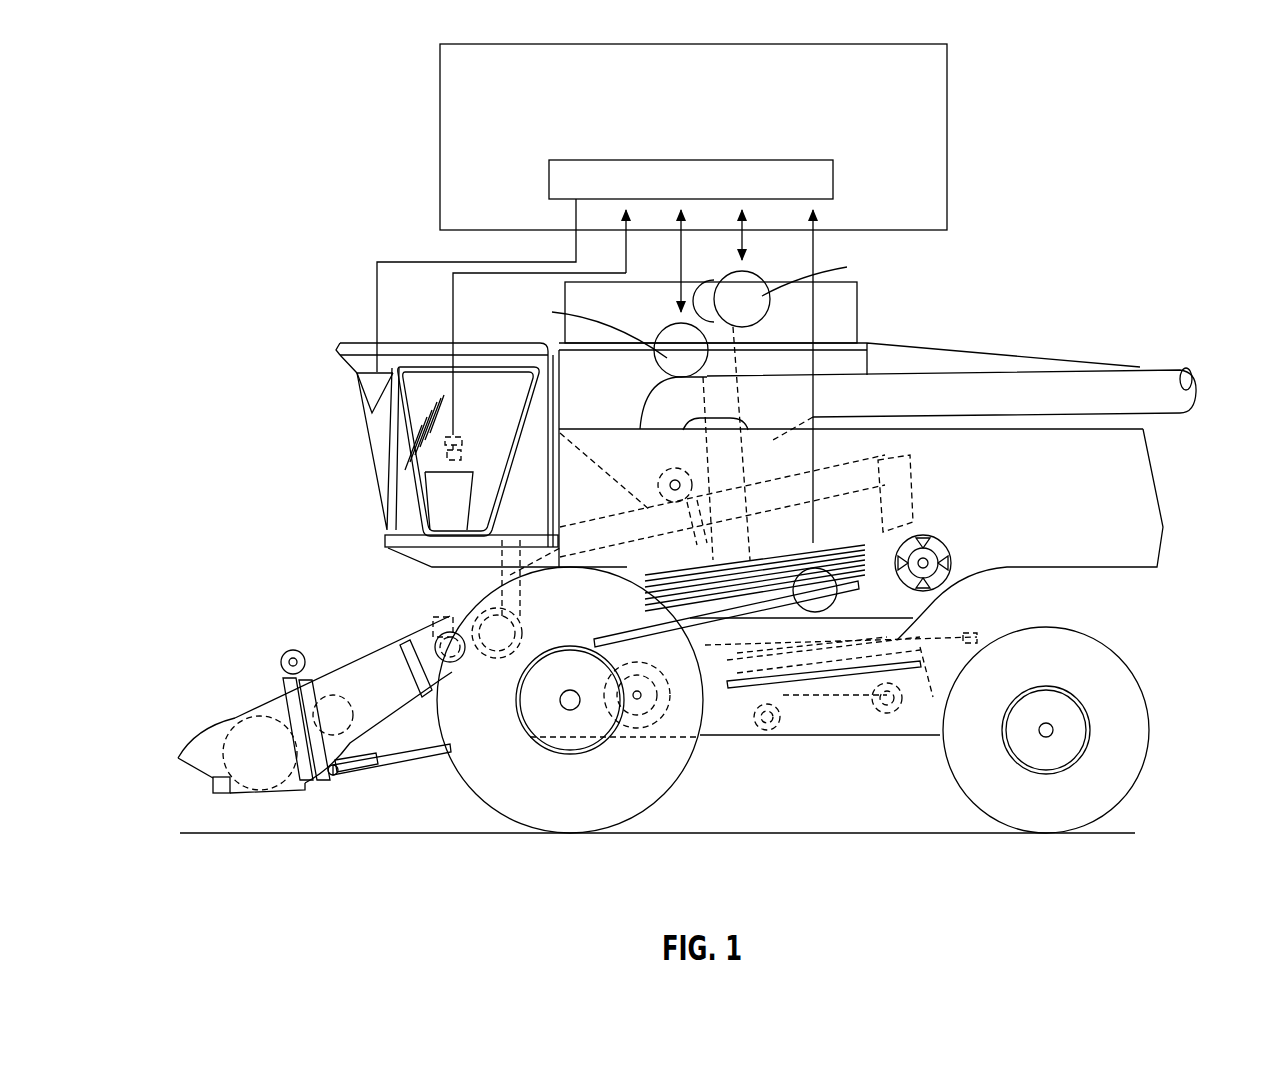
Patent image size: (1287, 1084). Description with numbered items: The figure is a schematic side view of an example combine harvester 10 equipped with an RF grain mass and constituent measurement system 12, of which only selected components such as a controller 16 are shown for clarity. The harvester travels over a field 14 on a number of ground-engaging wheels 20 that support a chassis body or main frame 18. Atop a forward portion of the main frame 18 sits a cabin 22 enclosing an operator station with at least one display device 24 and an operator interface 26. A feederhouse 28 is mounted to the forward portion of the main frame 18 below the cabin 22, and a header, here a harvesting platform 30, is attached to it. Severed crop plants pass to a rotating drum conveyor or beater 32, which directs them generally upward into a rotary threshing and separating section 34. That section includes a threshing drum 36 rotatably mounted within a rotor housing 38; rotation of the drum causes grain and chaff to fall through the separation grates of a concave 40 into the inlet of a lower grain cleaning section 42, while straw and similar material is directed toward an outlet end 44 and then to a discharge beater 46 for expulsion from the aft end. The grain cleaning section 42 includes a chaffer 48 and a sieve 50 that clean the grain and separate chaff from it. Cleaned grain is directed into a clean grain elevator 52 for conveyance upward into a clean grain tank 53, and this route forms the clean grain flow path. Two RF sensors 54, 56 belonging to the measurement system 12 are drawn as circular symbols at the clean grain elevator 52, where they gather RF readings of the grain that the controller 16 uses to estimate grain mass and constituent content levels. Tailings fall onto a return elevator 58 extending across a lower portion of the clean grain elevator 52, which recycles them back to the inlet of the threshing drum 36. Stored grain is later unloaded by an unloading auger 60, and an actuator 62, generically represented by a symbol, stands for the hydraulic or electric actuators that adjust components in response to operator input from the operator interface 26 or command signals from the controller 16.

The combine harvester 10 is at (248, 180).
The RF grain mass and constituent measurement system 12 is at (436, 124).
The field 14 is at (850, 834).
The controller 16 is at (607, 158).
The main frame 18 is at (1157, 481).
The ground-engaging wheels 20 is at (470, 613).
The cabin 22 is at (443, 344).
The display device 24 is at (373, 396).
The operator interface 26 is at (437, 448).
The feederhouse 28 is at (388, 663).
The harvesting platform 30 is at (257, 703).
The beater 32 is at (462, 597).
The rotary threshing and separating section 34 is at (631, 497).
The threshing drum 36 is at (605, 526).
The rotor housing 38 is at (799, 467).
The concave 40 is at (651, 695).
The grain cleaning section 42 is at (654, 733).
The outlet end 44 is at (913, 503).
The discharge beater 46 is at (950, 527).
The chaffer 48 is at (931, 649).
The sieve 50 is at (918, 699).
The clean grain elevator 52 is at (751, 410).
The clean grain tank 53 is at (871, 360).
The RF sensor 54 is at (672, 326).
The RF sensor 56 is at (756, 271).
The return elevator 58 is at (910, 634).
The unloading auger 60 is at (1143, 378).
The actuator 62 is at (744, 607).